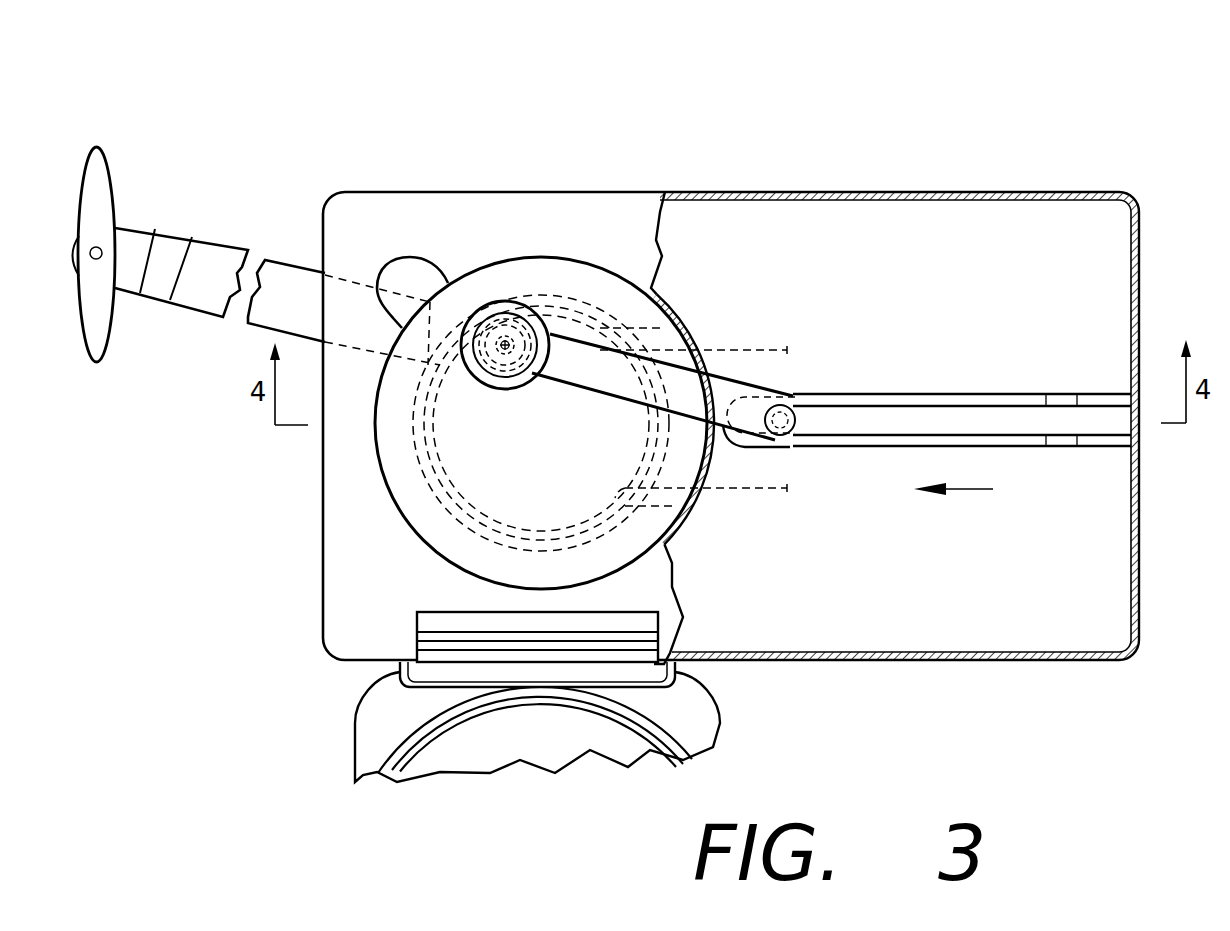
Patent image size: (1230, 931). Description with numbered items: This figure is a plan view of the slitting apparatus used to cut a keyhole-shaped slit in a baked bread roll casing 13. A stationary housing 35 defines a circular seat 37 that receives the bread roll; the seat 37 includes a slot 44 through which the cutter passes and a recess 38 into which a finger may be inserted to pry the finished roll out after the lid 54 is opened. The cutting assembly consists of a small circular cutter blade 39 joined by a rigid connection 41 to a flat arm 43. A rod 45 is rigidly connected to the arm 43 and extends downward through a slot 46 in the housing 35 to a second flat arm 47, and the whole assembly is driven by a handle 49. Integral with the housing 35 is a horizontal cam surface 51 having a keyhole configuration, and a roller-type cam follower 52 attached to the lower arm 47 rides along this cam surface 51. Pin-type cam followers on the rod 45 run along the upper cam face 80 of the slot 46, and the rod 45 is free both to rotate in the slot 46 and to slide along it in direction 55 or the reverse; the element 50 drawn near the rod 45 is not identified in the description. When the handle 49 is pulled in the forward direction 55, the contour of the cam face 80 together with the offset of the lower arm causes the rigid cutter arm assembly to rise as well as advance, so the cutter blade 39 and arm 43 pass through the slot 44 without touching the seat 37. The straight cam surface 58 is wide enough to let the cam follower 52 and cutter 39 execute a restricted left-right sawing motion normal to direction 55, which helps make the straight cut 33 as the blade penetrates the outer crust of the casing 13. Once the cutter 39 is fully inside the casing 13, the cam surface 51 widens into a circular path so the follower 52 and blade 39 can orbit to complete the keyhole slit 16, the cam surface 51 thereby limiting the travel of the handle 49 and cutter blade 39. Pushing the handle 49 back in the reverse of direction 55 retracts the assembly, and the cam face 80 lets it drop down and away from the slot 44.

The bread casing 13 is at (573, 290).
The keyhole slit 16 is at (455, 523).
The straight cut 33 is at (673, 457).
The housing 35 is at (336, 617).
The circular seat 37 is at (372, 445).
The recess 38 is at (390, 282).
The cutter blade 39 is at (478, 372).
The rigid connection 41 is at (505, 350).
The flat arm 43 is at (553, 377).
The slot in seat 44 is at (702, 466).
The rod 45 is at (790, 445).
The slot 46 is at (962, 410).
The second flat arm 47 is at (203, 302).
The handle 49 is at (100, 173).
The slot 50 is at (797, 397).
The cam surface 51 is at (562, 527).
The cam follower 52 is at (487, 307).
The lid 54 is at (360, 755).
The forward direction 55 is at (975, 489).
The straight cam surface 58 is at (790, 352).
The upper cam face 80 is at (1005, 447).